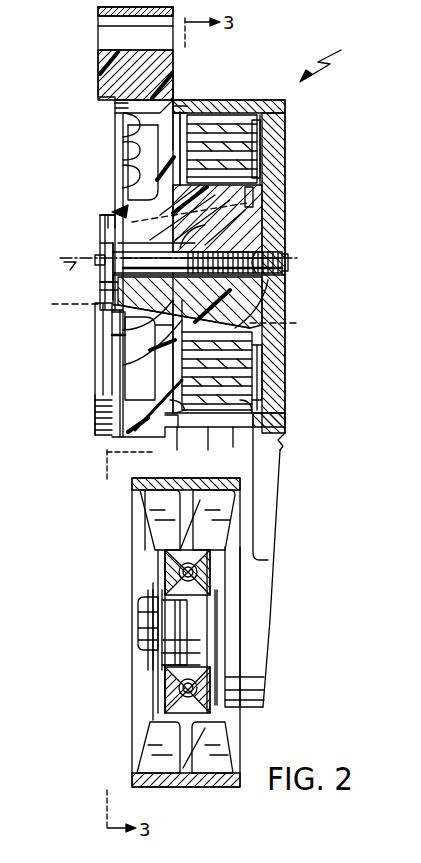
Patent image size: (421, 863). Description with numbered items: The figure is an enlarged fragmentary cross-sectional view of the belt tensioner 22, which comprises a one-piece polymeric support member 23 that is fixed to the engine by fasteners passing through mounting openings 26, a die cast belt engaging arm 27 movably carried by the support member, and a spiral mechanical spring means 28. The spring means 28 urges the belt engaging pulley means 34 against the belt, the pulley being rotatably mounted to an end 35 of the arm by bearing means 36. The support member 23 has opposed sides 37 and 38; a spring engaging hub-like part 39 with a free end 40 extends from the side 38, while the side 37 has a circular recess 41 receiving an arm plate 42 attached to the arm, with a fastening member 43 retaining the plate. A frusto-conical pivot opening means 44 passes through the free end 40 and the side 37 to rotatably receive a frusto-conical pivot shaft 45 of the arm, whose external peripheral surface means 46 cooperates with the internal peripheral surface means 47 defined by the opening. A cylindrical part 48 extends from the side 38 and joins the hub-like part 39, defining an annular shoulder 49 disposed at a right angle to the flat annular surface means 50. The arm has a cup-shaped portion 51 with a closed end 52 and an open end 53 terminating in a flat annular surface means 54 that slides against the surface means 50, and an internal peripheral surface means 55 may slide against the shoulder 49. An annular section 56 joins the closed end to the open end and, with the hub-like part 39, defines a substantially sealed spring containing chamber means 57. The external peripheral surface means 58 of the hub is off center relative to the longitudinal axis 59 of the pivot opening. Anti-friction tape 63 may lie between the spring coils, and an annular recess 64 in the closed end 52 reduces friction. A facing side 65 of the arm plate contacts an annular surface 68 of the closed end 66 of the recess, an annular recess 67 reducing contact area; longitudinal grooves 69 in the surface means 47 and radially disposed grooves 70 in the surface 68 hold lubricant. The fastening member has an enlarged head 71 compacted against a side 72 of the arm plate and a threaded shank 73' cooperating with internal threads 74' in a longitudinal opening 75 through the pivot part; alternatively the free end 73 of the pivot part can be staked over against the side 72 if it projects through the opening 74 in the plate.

The belt tensioner 22 is at (333, 56).
The support member 23 is at (108, 70).
The mounting openings 26 is at (120, 22).
The belt engaging arm 27 is at (284, 479).
The spring means 28 is at (235, 112).
The belt engaging pulley means 34 is at (211, 787).
The end of the arm 35 is at (260, 632).
The bearing means 36 is at (158, 583).
The side of the support member 37 is at (125, 128).
The side of the support member 38 is at (205, 115).
The hub-like part 39 is at (258, 189).
The free end 40 is at (242, 206).
The circular recess 41 is at (115, 107).
The arm plate 42 is at (118, 349).
The fastening member 43 is at (258, 248).
The pivot opening means 44 is at (108, 240).
The pivot shaft 45 is at (118, 320).
The external peripheral surface means 46 is at (120, 372).
The internal peripheral surface means 47 is at (262, 302).
The cylindrical part 48 is at (192, 442).
The annular shoulder 49 is at (180, 106).
The flat annular surface means 50 is at (176, 80).
The cup-shaped portion 51 is at (248, 493).
The closed end 52 is at (252, 395).
The open end 53 is at (172, 445).
The flat annular surface means 54 is at (135, 437).
The internal peripheral surface means 55 is at (122, 403).
The annular section 56 is at (215, 451).
The spring containing chamber means 57 is at (284, 439).
The external peripheral surface means 58 is at (254, 163).
The longitudinal axis 59 is at (68, 268).
The anti-friction tape 63 is at (255, 347).
The annular recess 64 is at (247, 369).
The facing side of the arm plate 65 is at (135, 170).
The closed end of the recess 66 is at (130, 147).
The annular recess 67 is at (160, 220).
The annular surface 68 is at (115, 210).
The longitudinal grooves 69 is at (291, 324).
The radially disposed grooves 70 is at (66, 306).
The enlarged head 71 is at (98, 258).
The side of the arm plate 72 is at (112, 335).
The free end of the pivot part 73 is at (97, 271).
The threaded shank 73' is at (320, 259).
The opening in the arm plate 74 is at (91, 214).
The internal threads 74' is at (305, 272).
The longitudinal opening 75 is at (190, 252).